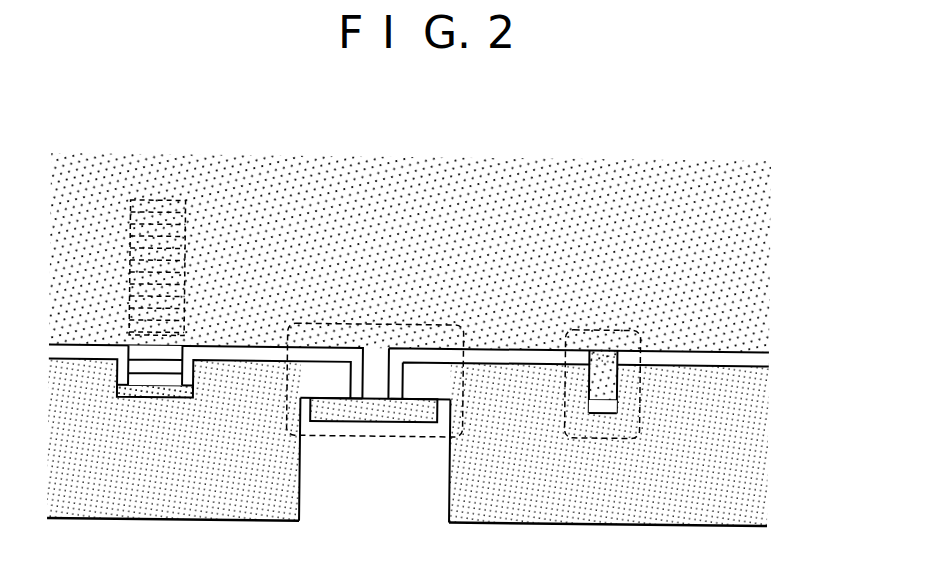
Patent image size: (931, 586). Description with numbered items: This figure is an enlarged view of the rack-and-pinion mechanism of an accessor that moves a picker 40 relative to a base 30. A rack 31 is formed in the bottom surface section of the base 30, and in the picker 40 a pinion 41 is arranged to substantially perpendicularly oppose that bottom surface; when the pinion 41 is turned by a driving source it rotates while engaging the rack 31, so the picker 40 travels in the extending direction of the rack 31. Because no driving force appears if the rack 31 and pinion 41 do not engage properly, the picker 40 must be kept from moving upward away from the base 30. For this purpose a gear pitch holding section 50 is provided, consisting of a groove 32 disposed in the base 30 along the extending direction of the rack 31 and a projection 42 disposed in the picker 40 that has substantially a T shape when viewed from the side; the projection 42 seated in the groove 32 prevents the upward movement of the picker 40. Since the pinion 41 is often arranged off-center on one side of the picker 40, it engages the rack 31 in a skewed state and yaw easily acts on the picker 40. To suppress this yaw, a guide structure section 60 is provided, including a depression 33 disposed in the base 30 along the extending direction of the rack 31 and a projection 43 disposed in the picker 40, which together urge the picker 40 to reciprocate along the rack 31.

The base 30 is at (747, 477).
The rack 31 is at (163, 398).
The groove 32 is at (403, 383).
The depression 33 is at (603, 413).
The picker 40 is at (735, 220).
The pinion 41 is at (156, 203).
The projection 42 is at (373, 412).
The projection 43 is at (603, 363).
The gear pitch holding section 50 is at (337, 436).
The guide structure section 60 is at (640, 330).